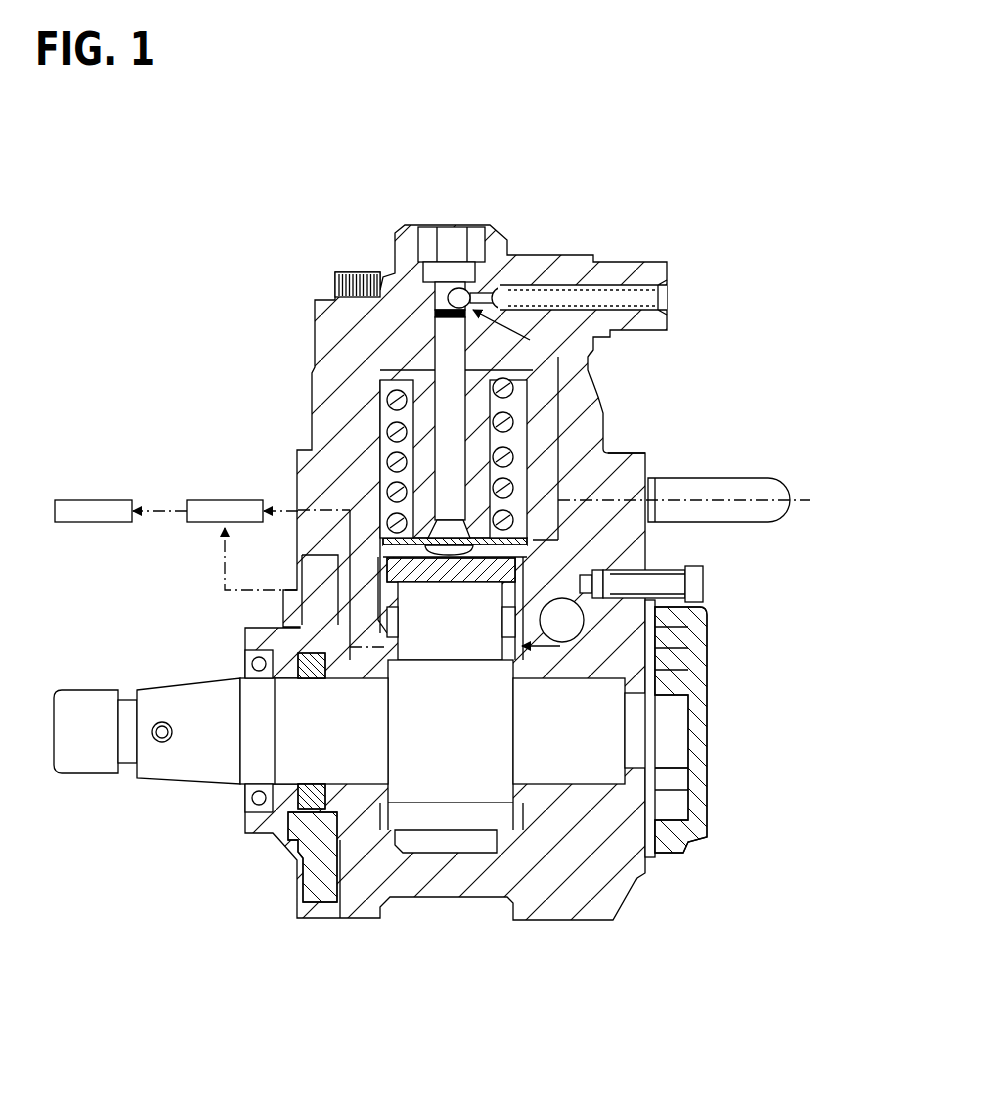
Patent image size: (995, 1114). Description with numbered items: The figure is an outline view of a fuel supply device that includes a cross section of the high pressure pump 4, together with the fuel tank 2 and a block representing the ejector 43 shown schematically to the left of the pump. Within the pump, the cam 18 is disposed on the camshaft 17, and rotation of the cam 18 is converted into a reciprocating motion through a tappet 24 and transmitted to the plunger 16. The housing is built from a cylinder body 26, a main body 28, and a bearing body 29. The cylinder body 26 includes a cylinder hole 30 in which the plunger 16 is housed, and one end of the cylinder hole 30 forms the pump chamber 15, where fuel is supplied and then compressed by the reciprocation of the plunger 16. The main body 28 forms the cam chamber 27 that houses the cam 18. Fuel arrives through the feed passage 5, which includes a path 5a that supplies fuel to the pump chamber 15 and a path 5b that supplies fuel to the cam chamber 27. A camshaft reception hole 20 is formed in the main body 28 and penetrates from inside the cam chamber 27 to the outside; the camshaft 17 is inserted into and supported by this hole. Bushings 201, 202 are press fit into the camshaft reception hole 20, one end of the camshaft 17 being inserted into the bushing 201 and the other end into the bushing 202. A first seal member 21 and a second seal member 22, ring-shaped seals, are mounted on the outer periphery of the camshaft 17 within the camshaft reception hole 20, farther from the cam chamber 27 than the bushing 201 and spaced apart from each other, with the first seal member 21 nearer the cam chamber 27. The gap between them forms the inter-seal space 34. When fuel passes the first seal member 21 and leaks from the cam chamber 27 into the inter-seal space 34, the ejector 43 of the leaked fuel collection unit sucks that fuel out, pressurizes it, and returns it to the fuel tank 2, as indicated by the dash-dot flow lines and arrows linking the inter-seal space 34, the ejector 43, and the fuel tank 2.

The fuel tank 2 is at (78, 505).
The high pressure pump 4 is at (713, 248).
The feed passage 5 is at (715, 498).
The path 5a is at (563, 403).
The path 5b is at (560, 540).
The pump chamber 15 is at (335, 277).
The plunger 16 is at (443, 332).
The camshaft 17 is at (198, 697).
The cam 18 is at (463, 777).
The camshaft reception hole 20 is at (385, 830).
The first seal member 21 is at (345, 850).
The second seal member 22 is at (268, 800).
The tappet 24 is at (377, 475).
The cylinder body 26 is at (412, 397).
The cam chamber 27 is at (502, 813).
The main body 28 is at (600, 636).
The bearing body 29 is at (333, 850).
The cylinder hole 30 is at (432, 353).
The inter-seal space 34 is at (318, 860).
The ejector 43 is at (228, 505).
The bushing 201 is at (305, 583).
The bushing 202 is at (578, 790).